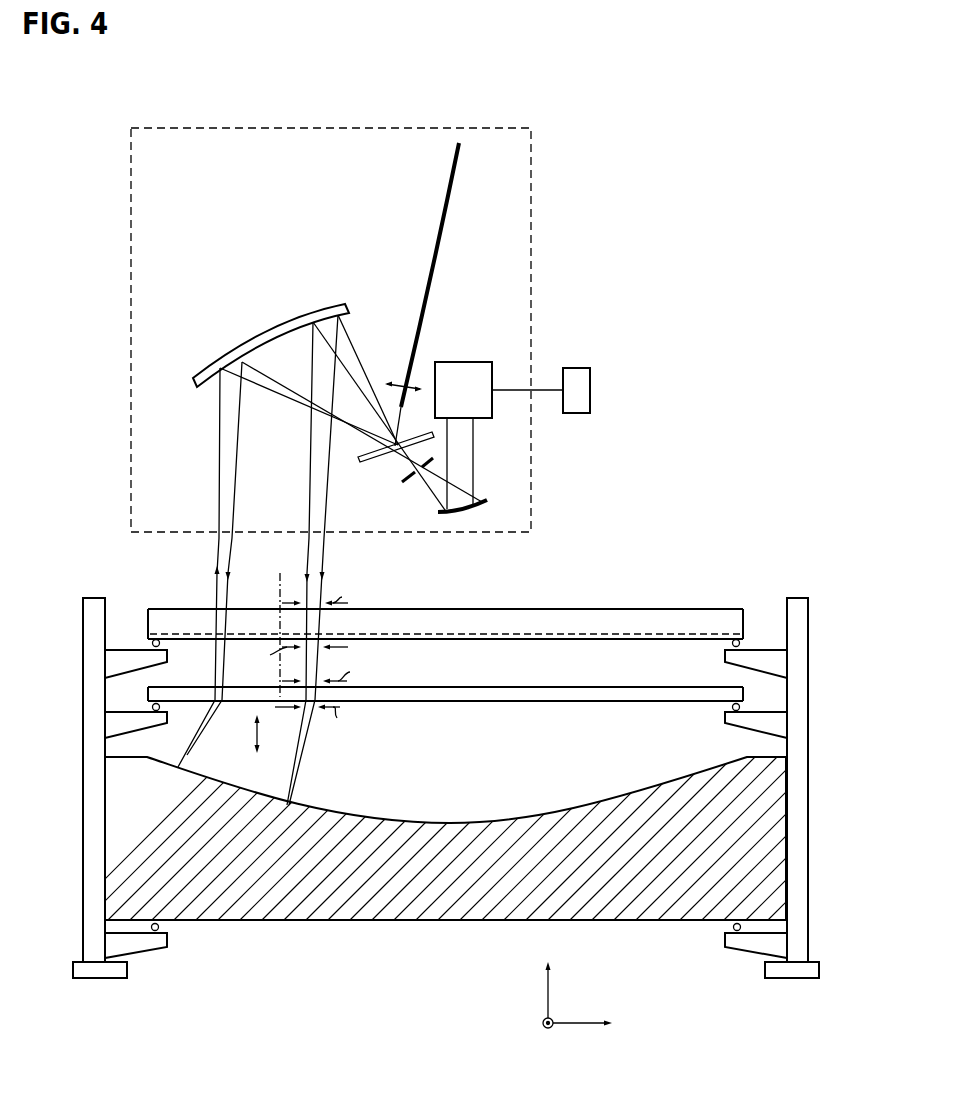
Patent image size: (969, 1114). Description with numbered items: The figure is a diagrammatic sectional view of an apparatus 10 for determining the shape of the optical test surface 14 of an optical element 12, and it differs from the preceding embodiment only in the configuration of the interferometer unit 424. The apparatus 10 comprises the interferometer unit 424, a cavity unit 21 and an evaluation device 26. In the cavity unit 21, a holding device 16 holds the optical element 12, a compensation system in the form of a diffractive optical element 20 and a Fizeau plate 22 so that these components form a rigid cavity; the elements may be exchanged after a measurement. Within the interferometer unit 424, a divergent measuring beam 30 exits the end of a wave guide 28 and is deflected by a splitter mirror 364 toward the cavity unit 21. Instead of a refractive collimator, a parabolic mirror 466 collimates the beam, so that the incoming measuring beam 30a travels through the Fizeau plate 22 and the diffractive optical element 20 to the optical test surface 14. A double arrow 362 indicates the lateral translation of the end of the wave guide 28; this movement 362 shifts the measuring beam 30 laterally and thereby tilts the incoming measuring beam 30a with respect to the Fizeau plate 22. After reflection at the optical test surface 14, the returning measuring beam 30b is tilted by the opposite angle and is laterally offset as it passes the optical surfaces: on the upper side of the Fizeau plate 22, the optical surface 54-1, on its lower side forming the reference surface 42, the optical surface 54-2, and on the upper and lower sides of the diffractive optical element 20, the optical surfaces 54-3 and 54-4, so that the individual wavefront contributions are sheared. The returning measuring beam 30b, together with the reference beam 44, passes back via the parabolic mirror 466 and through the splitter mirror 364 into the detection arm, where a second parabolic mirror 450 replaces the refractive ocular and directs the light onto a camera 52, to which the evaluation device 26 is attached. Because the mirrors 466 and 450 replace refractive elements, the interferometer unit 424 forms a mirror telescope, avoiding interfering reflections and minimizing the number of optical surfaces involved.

The apparatus 10 is at (100, 491).
The interferometer unit 424 is at (130, 305).
The parabolic mirror 466 is at (275, 325).
The wave guide 28 is at (452, 187).
The double arrow / translation movement 362 is at (397, 382).
The camera 52 is at (458, 362).
The evaluation device 26 is at (590, 386).
The splitter mirror 364 is at (373, 462).
The measuring beam 30 is at (404, 430).
The parabolic mirror 450 is at (465, 515).
The incoming measuring beam 30a is at (323, 583).
The returning measuring beam 30b is at (307, 583).
The reference beam 44 is at (276, 628).
The Fizeau plate 22 is at (445, 617).
The optical surface 54-1 is at (491, 605).
The optical surface 54-2 is at (433, 643).
The reference surface 42 is at (506, 637).
The diffractive optical element 20 is at (445, 698).
The optical surface 54-3 is at (620, 672).
The optical surface 54-4 is at (463, 705).
The holding device 16 is at (93, 588).
The cavity unit 21 is at (70, 723).
The optical element 12 is at (412, 921).
The optical test surface 14 is at (516, 814).